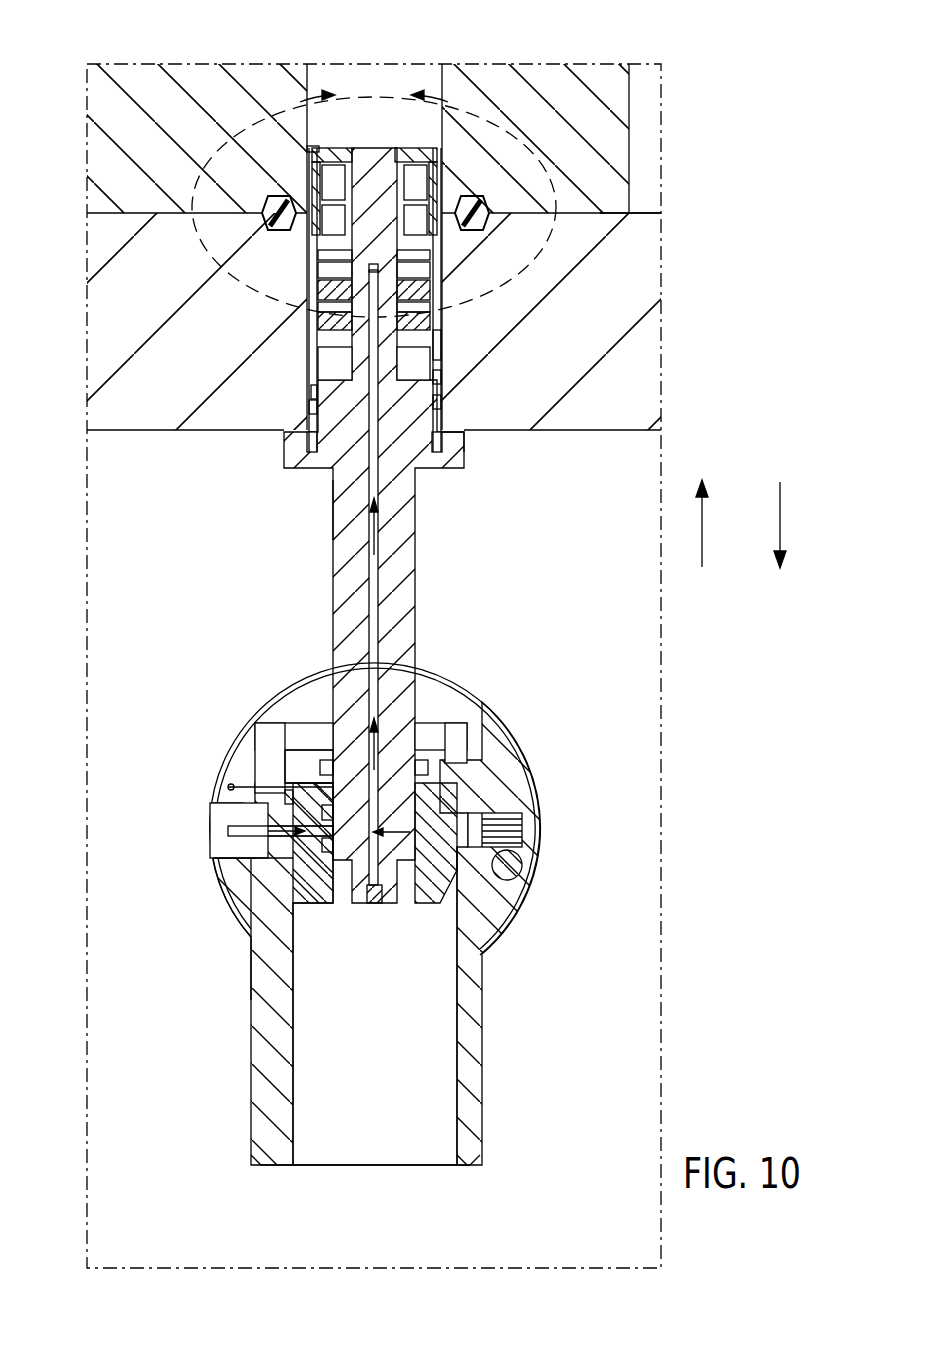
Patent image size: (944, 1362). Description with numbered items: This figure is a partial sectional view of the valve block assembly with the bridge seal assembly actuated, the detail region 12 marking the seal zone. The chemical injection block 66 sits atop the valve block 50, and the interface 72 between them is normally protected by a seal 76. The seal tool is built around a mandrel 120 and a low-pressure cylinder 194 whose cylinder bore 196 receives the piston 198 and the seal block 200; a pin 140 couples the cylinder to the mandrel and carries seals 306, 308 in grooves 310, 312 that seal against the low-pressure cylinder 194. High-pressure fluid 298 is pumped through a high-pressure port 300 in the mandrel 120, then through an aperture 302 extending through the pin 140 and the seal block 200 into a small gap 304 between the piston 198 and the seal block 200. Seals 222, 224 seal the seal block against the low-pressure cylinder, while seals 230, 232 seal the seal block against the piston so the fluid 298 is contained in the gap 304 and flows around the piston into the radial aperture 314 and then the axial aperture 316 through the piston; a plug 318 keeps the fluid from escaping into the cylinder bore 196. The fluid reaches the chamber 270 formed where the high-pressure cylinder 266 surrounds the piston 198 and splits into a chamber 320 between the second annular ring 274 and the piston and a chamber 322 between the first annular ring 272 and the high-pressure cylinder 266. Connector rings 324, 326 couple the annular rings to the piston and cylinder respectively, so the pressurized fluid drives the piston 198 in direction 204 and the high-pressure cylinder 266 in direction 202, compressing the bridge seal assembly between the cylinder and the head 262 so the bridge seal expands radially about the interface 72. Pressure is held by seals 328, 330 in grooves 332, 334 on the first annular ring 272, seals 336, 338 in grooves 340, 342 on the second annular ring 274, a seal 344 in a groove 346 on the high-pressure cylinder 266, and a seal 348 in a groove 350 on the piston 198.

The chemical injection block 66 is at (146, 74).
The valve block 50 is at (100, 243).
The interface 72 is at (608, 214).
The seal 76 is at (262, 212).
The detail region 12 is at (374, 199).
The piston 198 is at (405, 566).
The chamber 320 is at (330, 362).
The seal 344 is at (361, 165).
The groove 346 is at (405, 165).
The head 262 is at (310, 150).
The groove 342 is at (372, 268).
The seal 330 is at (320, 258).
The groove 334 is at (430, 258).
The chamber 322 is at (328, 272).
The connector ring 324 is at (440, 285).
The seal 328 is at (318, 300).
The groove 332 is at (432, 305).
The chamber 270 is at (330, 325).
The first annular ring 272 is at (432, 325).
The seal 336 is at (330, 345).
The connector ring 326 is at (432, 340).
The groove 340 is at (442, 355).
The seal 348 is at (314, 398).
The second annular ring 274 is at (442, 377).
The seal 338 is at (312, 407).
The high-pressure cylinder 266 is at (442, 400).
The groove 350 is at (470, 440).
The axial aperture 316 is at (340, 508).
The high-pressure fluid 298 is at (370, 545).
The seal 230 is at (470, 800).
The seal 232 is at (522, 832).
The low-pressure cylinder 194 is at (470, 1034).
The cylinder bore 196 is at (355, 1043).
The seal 222 is at (328, 905).
The seal block 200 is at (430, 905).
The plug 318 is at (378, 905).
The gap 304 is at (345, 690).
The radial aperture 314 is at (440, 722).
The seal 224 is at (300, 760).
The aperture 302 is at (325, 800).
The seal 308 is at (290, 795).
The seal 306 is at (262, 800).
The pin 140 is at (225, 815).
The high-pressure port 300 is at (225, 825).
The mandrel 120 is at (235, 870).
The groove 310 is at (240, 900).
The groove 312 is at (258, 960).
The direction 202 is at (702, 530).
The direction 204 is at (780, 515).